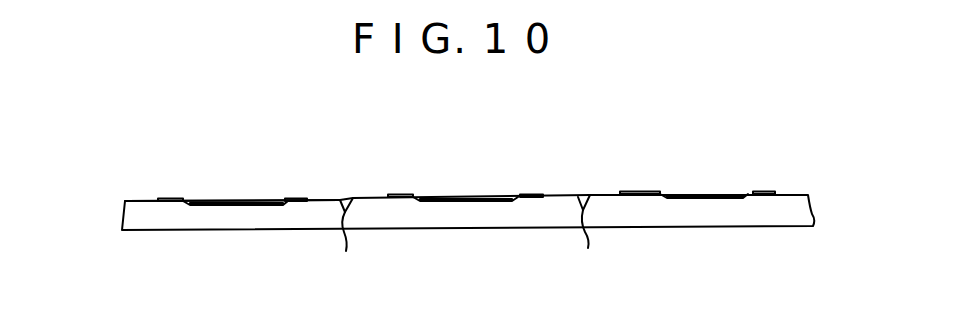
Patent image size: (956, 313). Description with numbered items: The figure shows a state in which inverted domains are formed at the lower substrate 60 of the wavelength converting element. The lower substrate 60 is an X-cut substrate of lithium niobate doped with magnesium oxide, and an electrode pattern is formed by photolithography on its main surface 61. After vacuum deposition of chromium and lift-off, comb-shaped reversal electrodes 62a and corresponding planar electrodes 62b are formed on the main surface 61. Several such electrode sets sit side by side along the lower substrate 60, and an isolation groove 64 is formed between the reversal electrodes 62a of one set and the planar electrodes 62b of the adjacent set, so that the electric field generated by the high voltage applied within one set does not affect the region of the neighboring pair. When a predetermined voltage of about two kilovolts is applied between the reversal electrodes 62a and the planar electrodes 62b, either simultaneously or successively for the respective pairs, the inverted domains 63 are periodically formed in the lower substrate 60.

The lower substrate 60 is at (122, 221).
The main surface 61 is at (143, 201).
The reversal electrodes 62a is at (182, 198).
The planar electrodes 62b is at (298, 198).
The inverted domains 63 is at (260, 202).
The isolation groove 64 is at (466, 239).